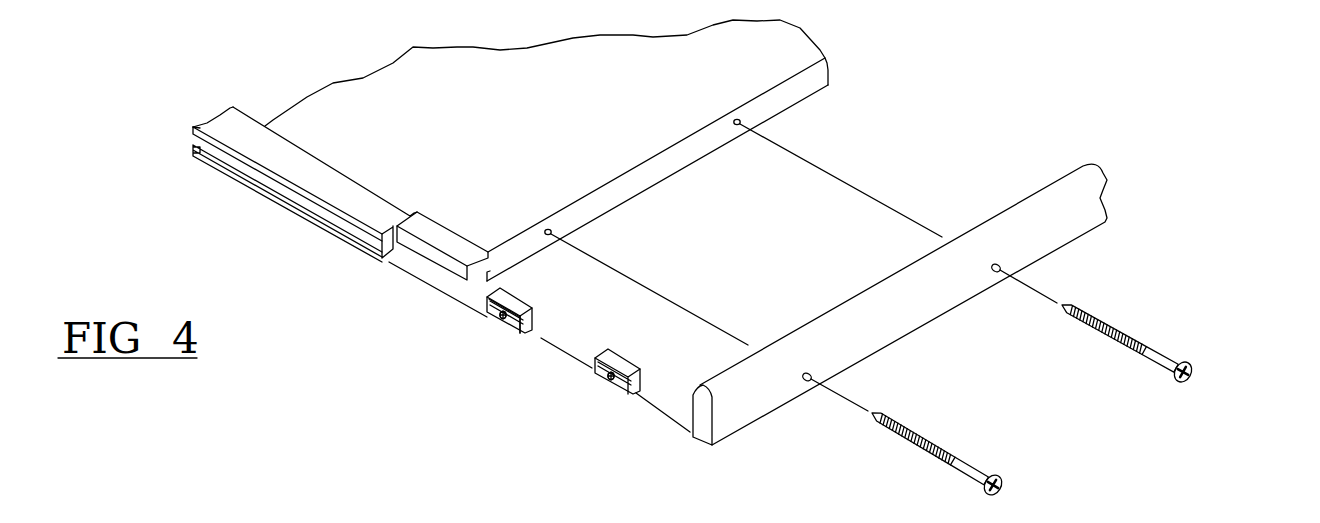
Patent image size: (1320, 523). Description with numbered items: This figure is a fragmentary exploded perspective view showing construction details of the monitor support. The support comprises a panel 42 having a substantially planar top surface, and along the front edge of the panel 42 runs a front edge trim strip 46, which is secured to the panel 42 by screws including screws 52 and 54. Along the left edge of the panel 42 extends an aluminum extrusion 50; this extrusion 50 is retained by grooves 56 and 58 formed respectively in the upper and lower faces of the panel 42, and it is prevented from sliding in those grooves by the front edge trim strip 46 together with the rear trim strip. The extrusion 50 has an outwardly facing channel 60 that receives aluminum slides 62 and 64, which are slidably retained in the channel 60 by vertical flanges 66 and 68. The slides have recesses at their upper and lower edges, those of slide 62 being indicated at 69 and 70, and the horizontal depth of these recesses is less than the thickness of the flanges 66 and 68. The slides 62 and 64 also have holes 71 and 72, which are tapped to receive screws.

The panel 42 is at (603, 226).
The front edge trim strip 46 is at (1107, 180).
The aluminum extrusion 50 is at (288, 160).
The screw 52 is at (1000, 478).
The screw 54 is at (1188, 362).
The groove 56 is at (462, 235).
The groove 58 is at (487, 279).
The outwardly facing channel 60 is at (368, 248).
The aluminum slide 62 is at (535, 318).
The aluminum slide 64 is at (618, 355).
The vertical flange 66 is at (193, 128).
The vertical flange 68 is at (193, 152).
The block top surface 69 is at (517, 298).
The recess 70 is at (525, 333).
The hole 71 is at (495, 317).
The hole 72 is at (610, 380).